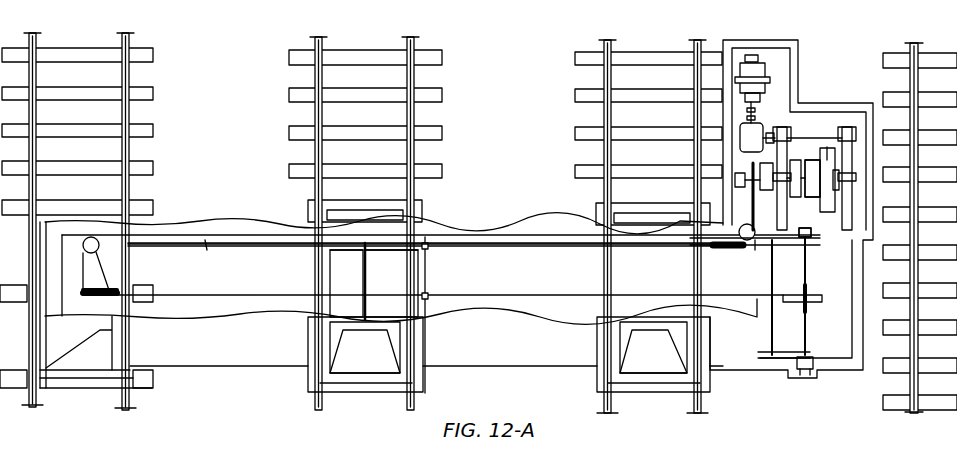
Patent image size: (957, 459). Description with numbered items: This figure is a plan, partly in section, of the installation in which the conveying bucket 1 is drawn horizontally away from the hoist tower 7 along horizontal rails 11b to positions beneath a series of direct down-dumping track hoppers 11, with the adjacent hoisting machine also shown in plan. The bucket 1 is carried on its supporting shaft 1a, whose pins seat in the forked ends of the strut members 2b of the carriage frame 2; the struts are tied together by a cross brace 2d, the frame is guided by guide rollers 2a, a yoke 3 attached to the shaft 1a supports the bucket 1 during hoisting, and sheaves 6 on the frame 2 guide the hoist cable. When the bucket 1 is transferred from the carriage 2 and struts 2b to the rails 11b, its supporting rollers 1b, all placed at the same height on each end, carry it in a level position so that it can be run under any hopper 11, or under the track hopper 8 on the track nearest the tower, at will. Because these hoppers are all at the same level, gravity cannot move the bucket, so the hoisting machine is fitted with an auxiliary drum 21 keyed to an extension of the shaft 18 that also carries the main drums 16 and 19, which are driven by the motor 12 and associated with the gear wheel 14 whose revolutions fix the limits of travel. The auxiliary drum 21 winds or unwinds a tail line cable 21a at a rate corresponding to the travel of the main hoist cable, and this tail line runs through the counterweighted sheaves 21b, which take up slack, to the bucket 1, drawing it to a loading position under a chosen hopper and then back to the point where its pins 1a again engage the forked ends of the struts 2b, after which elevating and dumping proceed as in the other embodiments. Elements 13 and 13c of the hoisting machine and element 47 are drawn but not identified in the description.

The conveying bucket 1 is at (391, 281).
The conveying bucket supporting shaft 1a is at (365, 290).
The conveying bucket supporting rollers 1b is at (336, 258).
The carriage frame 2 is at (807, 274).
The guide rollers of frame 2a is at (808, 240).
The strut members 2b is at (757, 247).
The cross brace 2d is at (771, 290).
The yoke 3 is at (428, 268).
The sheaves 6 is at (812, 301).
The hoist tower 7 is at (813, 360).
The track hopper 8 is at (96, 305).
The multiple track hoppers 11 is at (509, 354).
The horizontal rails 11b is at (522, 258).
The motor 12 is at (738, 80).
The gear unit 13 is at (736, 132).
The control lever 13c is at (827, 147).
The gear wheel 14 is at (835, 192).
The drum 16 is at (812, 197).
The shaft 18 is at (737, 165).
The drum 19 is at (810, 162).
The auxiliary drum 21 is at (760, 210).
The tail line cable 21a is at (207, 240).
The counterweight and sheaves 21b is at (92, 282).
The conveyor bed 47 is at (432, 289).